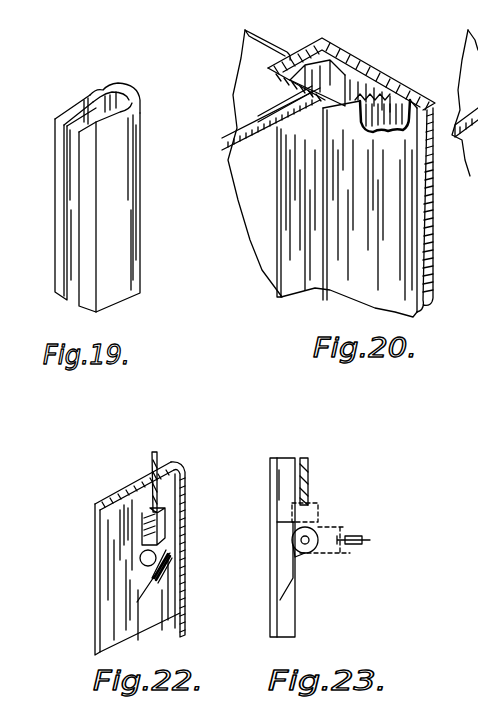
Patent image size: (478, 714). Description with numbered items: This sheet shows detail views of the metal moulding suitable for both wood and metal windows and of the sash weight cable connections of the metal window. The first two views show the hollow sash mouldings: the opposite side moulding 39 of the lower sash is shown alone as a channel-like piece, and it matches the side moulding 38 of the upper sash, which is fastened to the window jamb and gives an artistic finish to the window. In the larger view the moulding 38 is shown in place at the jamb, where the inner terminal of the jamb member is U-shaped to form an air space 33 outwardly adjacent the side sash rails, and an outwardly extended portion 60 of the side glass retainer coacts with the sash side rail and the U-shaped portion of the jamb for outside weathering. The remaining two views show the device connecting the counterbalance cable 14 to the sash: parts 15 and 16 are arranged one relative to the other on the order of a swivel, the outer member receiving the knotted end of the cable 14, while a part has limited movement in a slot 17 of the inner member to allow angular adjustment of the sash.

In FIG. 22, the cable 14 is at (158, 460).
In FIG. 23, the cable 14 is at (304, 481).
In FIG. 22, the part of cable connecting device 15 is at (165, 523).
In FIG. 23, the part of cable connecting device 15 is at (345, 555).
In FIG. 22, the part of cable connecting device 16 is at (140, 547).
In FIG. 23, the part of cable connecting device 16 is at (284, 545).
In FIG. 22, the slot 17 is at (156, 576).
In FIG. 23, the slot 17 is at (306, 560).
In FIG. 20, the air space 33 is at (300, 52).
In FIG. 20, the side moulding 38 is at (420, 170).
In FIG. 19, the side moulding 39 is at (138, 131).
In FIG. 20, the outwardly extended portion of glass retainer 60 is at (333, 68).